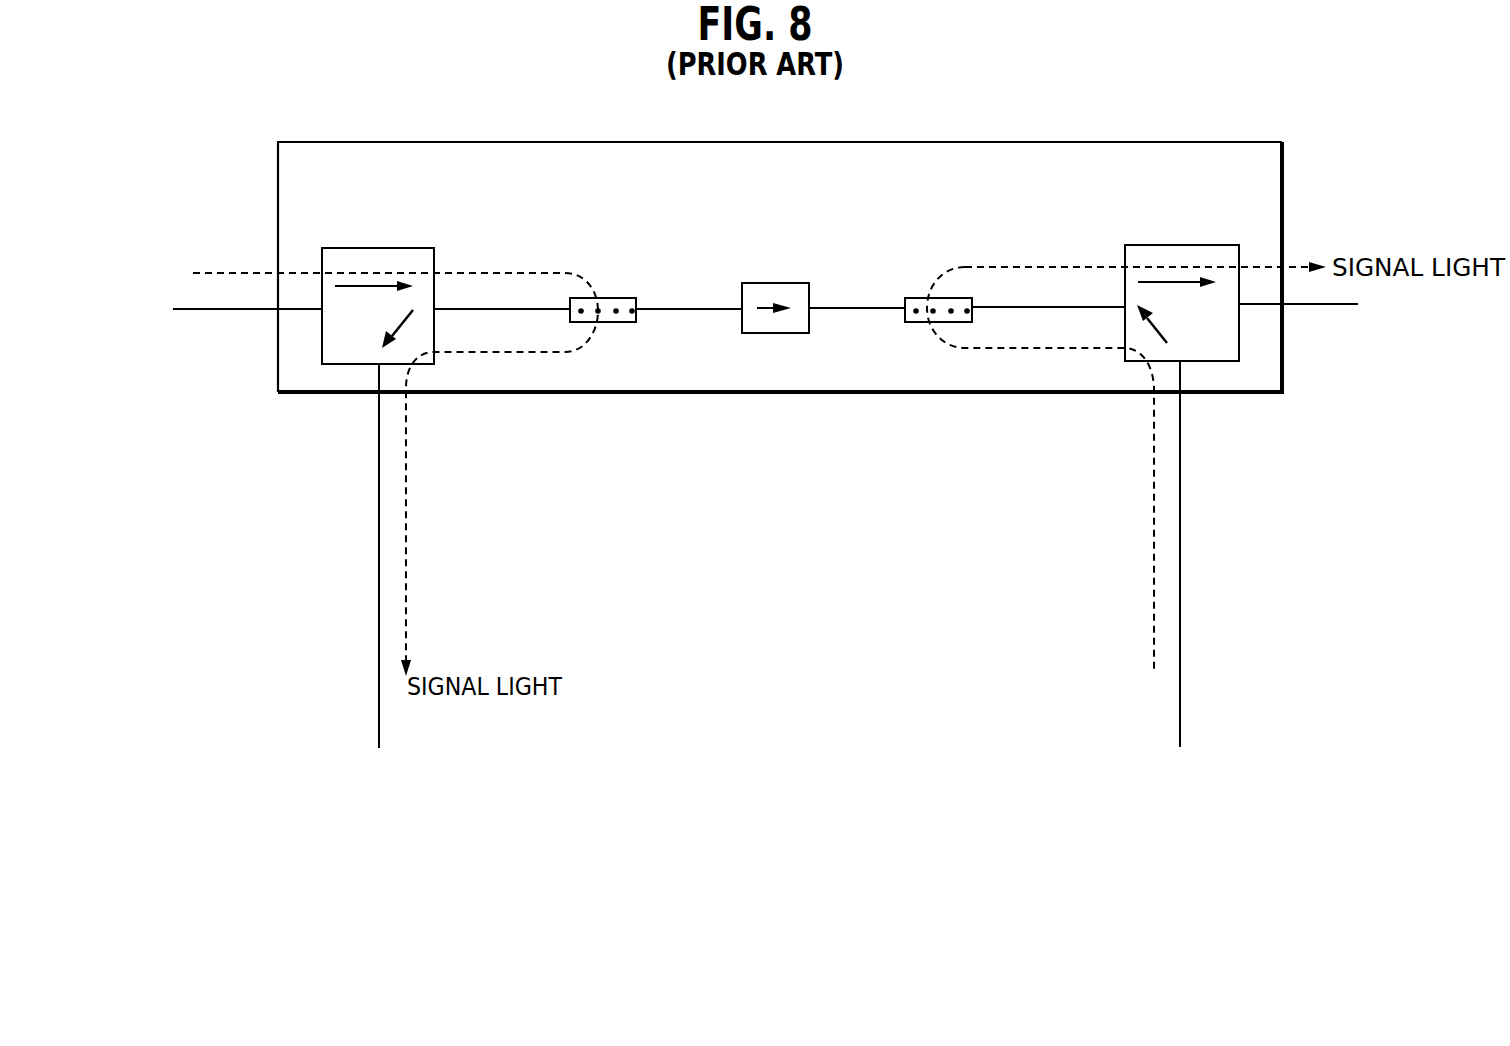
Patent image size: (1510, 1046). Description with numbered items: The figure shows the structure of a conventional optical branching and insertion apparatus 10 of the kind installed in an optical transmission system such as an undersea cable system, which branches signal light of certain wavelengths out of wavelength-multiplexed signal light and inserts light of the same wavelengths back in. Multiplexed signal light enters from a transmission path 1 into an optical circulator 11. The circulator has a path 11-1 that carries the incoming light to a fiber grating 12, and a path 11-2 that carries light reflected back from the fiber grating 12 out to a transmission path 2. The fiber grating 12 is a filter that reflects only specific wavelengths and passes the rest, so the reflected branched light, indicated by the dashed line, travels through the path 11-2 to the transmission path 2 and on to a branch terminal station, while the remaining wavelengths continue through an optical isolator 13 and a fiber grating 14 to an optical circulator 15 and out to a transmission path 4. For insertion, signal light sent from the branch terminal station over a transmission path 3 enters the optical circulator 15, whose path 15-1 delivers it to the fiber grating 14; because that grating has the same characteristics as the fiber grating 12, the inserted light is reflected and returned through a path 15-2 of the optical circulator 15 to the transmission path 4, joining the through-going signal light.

The transmission path 1 is at (227, 310).
The transmission path 2 is at (379, 558).
The transmission path 3 is at (1180, 558).
The transmission path 4 is at (1340, 305).
The optical branching and insertion apparatus 10 is at (1284, 352).
The optical circulator 11 is at (407, 270).
The path 11-1 is at (368, 289).
The path 11-2 is at (410, 317).
The fiber grating 12 is at (605, 297).
The optical isolator 13 is at (775, 282).
The fiber grating 14 is at (922, 297).
The optical circulator 15 is at (1137, 267).
The path 15-1 is at (1150, 330).
The path 15-2 is at (1168, 284).